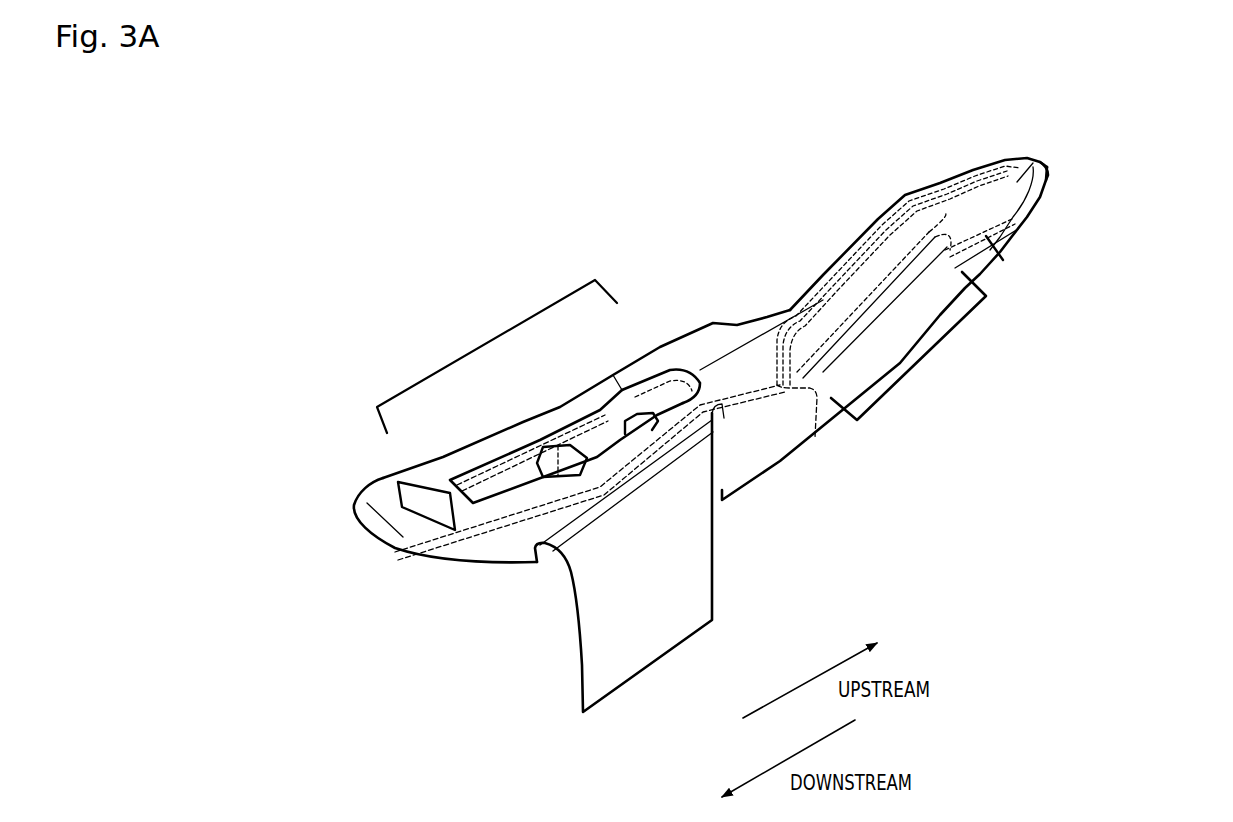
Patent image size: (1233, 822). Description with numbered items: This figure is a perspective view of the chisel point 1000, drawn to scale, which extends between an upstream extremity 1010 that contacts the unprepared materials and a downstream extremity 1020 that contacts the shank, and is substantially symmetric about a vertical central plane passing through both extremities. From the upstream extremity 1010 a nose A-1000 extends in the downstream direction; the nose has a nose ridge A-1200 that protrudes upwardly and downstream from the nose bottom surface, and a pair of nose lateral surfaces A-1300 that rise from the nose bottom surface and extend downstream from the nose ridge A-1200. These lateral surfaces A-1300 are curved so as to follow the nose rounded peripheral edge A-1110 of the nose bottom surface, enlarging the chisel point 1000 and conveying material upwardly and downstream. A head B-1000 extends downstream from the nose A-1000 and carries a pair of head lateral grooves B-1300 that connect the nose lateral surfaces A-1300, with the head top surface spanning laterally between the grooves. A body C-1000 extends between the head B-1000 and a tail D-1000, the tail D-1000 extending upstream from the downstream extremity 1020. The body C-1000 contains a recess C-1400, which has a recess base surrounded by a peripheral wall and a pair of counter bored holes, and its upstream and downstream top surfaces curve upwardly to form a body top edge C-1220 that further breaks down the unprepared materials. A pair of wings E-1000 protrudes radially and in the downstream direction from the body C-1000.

The chisel point 1000 is at (684, 226).
The upstream extremity 1010 is at (1047, 166).
The downstream extremity 1020 is at (365, 510).
The nose A-1000 is at (965, 152).
The nose rounded peripheral edge A-1110 is at (1020, 230).
The nose ridge A-1200 is at (1017, 182).
The nose lateral surfaces A-1300 is at (1003, 260).
The head B-1000 is at (825, 207).
The head lateral grooves B-1300 is at (918, 360).
The body C-1000 is at (565, 280).
The body top edge C-1220 is at (615, 376).
The recess C-1400 is at (458, 358).
The tail D-1000 is at (357, 452).
The wings E-1000 is at (732, 570).